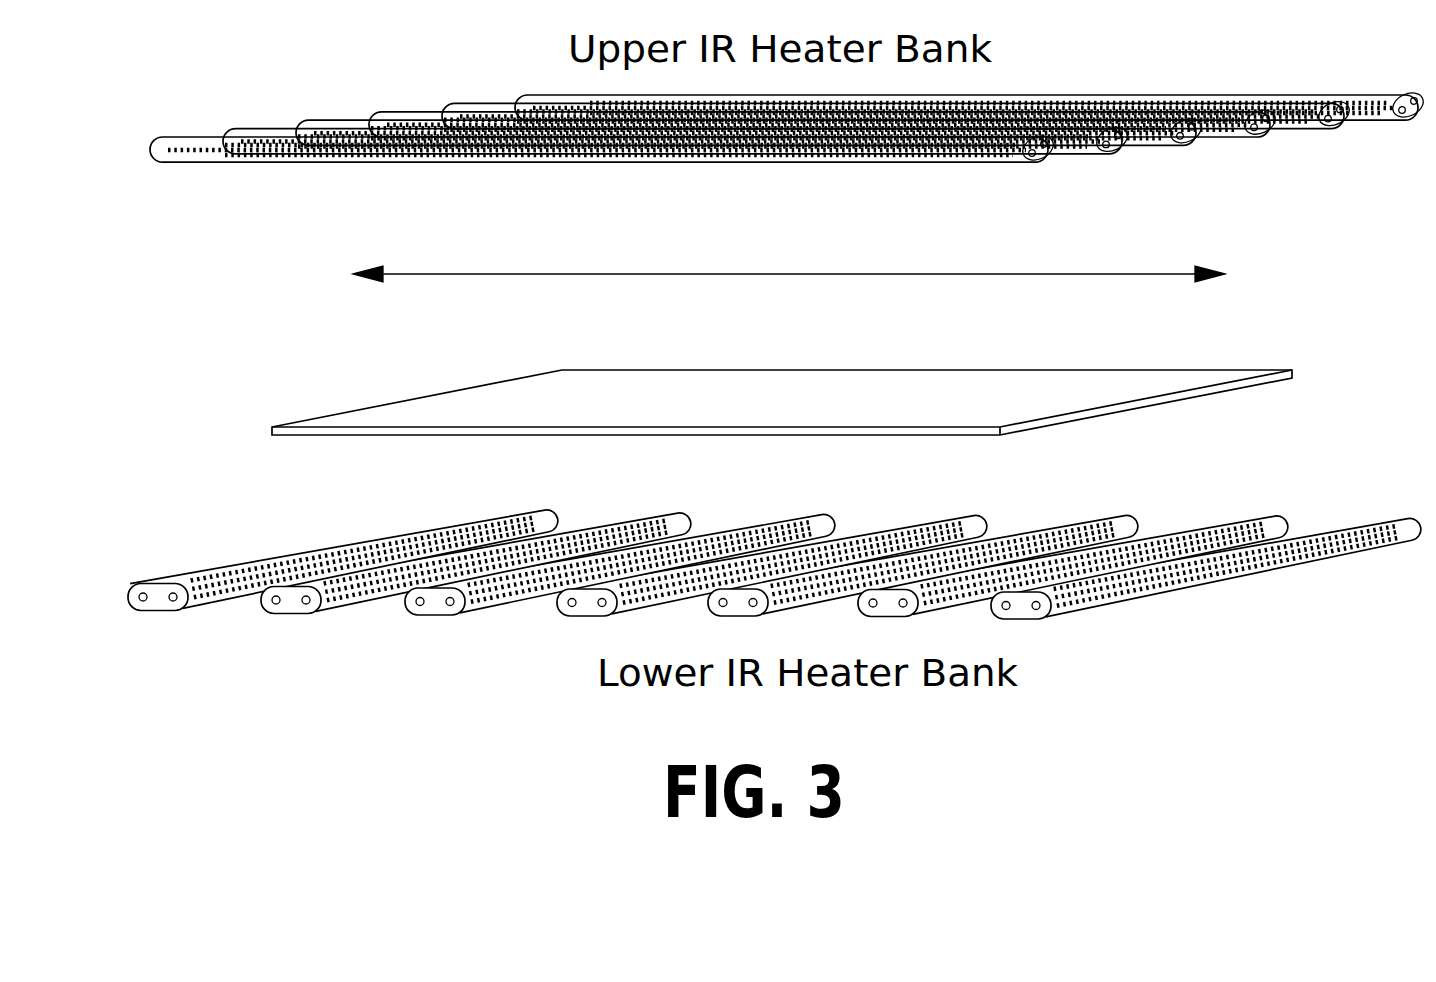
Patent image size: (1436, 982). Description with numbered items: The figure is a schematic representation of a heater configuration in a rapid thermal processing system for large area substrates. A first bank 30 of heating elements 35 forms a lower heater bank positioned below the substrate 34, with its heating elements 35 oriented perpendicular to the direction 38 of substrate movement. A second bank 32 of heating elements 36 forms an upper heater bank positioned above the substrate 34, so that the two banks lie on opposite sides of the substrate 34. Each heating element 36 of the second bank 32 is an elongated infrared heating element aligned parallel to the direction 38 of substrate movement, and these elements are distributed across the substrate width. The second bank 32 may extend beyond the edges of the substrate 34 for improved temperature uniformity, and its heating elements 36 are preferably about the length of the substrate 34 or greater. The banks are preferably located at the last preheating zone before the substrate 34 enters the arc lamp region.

The first bank 30 is at (776, 587).
The second bank 32 is at (788, 162).
The substrate 34 is at (1070, 370).
The heating elements 35 is at (276, 604).
The heating elements 36 is at (262, 163).
The direction 38 is at (995, 272).